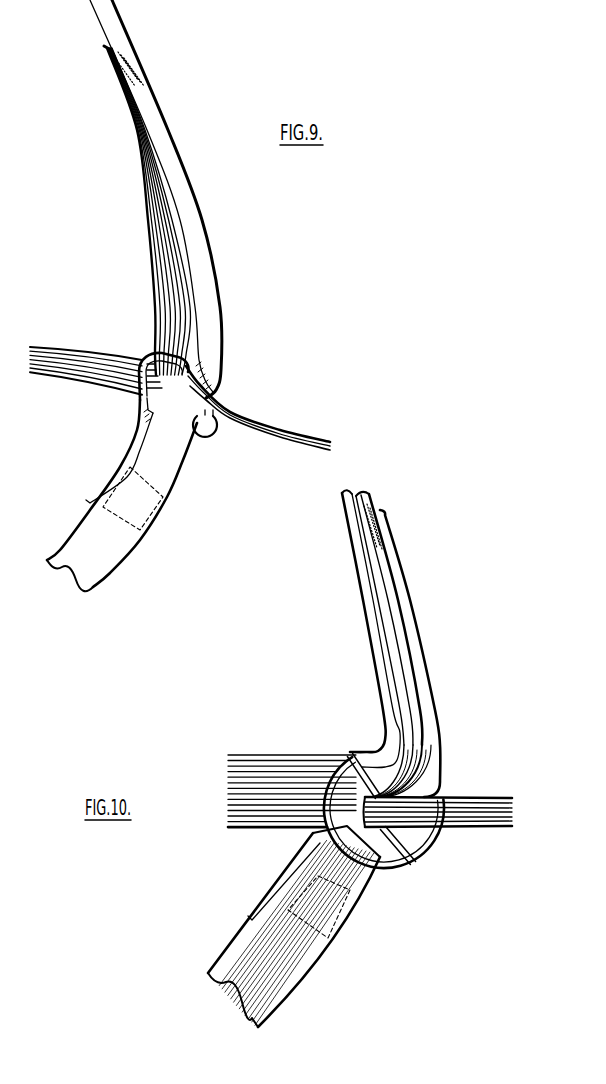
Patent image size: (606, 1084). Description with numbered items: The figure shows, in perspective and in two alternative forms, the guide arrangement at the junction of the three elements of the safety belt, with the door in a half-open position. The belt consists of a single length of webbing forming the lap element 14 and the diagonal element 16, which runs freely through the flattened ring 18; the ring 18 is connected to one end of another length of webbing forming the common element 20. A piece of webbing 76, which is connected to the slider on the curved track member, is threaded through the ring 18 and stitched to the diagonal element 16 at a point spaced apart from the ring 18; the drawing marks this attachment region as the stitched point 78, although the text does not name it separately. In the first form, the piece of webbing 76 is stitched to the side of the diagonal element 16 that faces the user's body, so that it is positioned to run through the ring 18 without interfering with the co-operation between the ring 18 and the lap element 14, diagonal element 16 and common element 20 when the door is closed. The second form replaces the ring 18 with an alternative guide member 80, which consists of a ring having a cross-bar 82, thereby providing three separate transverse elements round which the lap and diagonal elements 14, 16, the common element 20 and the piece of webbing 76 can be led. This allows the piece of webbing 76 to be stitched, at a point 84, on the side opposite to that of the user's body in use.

In FIG. 9, the lap element 14 is at (70, 375).
In FIG. 10, the lap element 14 is at (280, 773).
In FIG. 9, the diagonal element 16 is at (190, 208).
In FIG. 10, the diagonal element 16 is at (376, 627).
In FIG. 9, the flattened ring 18 is at (210, 439).
In FIG. 9, the common element 20 is at (96, 552).
In FIG. 10, the common element 20 is at (272, 967).
In FIG. 9, the piece of webbing 76 is at (148, 190).
In FIG. 10, the piece of webbing 76 is at (474, 797).
In FIG. 9, the adhesive bond 78 is at (140, 66).
In FIG. 10, the guide member 80 is at (390, 871).
In FIG. 10, the cross-bar 82 is at (417, 836).
In FIG. 10, the stitching point 84 is at (386, 522).